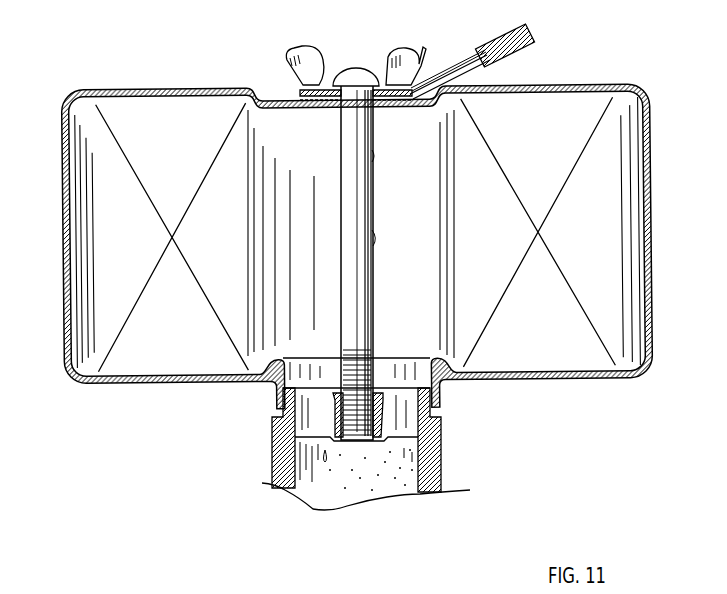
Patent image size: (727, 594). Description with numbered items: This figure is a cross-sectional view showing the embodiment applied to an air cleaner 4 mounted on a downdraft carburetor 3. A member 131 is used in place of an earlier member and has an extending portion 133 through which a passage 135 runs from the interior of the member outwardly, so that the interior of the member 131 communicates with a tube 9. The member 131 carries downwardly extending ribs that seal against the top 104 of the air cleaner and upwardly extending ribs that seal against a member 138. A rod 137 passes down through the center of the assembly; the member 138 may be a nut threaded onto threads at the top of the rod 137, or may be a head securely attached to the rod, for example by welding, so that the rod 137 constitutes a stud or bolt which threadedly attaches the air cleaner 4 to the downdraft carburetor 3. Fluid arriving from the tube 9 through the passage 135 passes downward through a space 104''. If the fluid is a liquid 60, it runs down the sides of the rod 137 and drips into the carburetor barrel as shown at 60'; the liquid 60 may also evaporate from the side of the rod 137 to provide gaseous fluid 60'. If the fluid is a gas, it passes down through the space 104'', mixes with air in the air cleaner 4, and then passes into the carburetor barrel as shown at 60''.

The air cleaner 4 is at (62, 271).
The downdraft carburetor 3 is at (273, 453).
The tube 9 is at (506, 47).
The liquid 60 is at (388, 263).
The dripping liquid 60' is at (320, 490).
The gaseous fluid in carburetor barrel 60'' is at (377, 492).
The top 104 is at (281, 231).
The space 104'' is at (413, 230).
The member 131 is at (323, 99).
The extending portion 133 is at (461, 68).
The passage 135 is at (434, 80).
The rod 137 is at (373, 213).
The member 138 is at (311, 56).